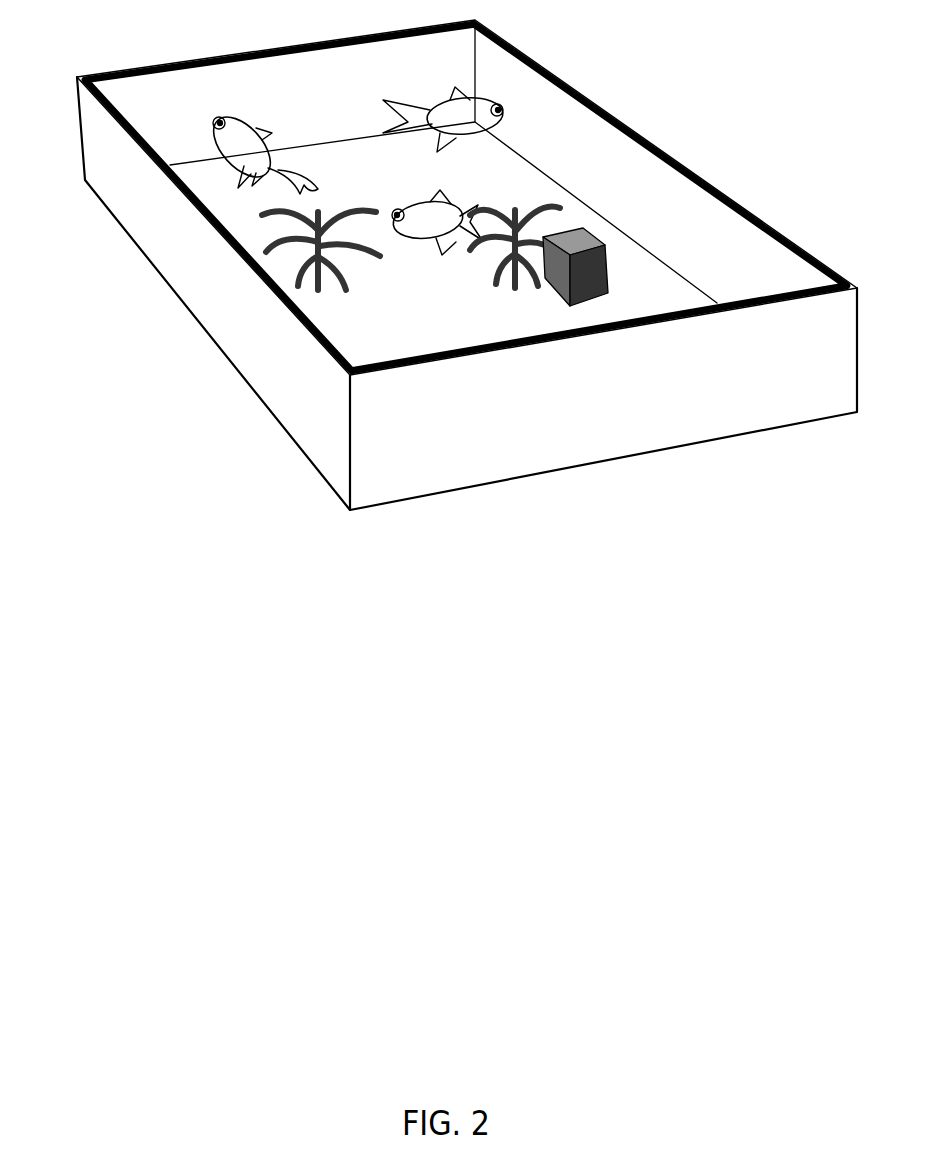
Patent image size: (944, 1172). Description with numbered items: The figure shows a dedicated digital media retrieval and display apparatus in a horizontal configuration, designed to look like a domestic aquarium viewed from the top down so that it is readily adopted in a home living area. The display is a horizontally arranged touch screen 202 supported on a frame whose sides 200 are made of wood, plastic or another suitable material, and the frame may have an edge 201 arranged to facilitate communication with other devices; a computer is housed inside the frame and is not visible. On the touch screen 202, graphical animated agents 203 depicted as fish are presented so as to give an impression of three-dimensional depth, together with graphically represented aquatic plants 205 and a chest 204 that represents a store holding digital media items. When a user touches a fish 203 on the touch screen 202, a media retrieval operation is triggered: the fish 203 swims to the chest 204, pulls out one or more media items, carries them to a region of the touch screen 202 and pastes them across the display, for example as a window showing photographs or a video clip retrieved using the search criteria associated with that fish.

The sides 200 is at (194, 302).
The edge 201 is at (310, 333).
The touch screen 202 is at (658, 165).
The graphical animated agents 203 is at (478, 107).
The chest 204 is at (593, 278).
The aquatic plants 205 is at (275, 218).